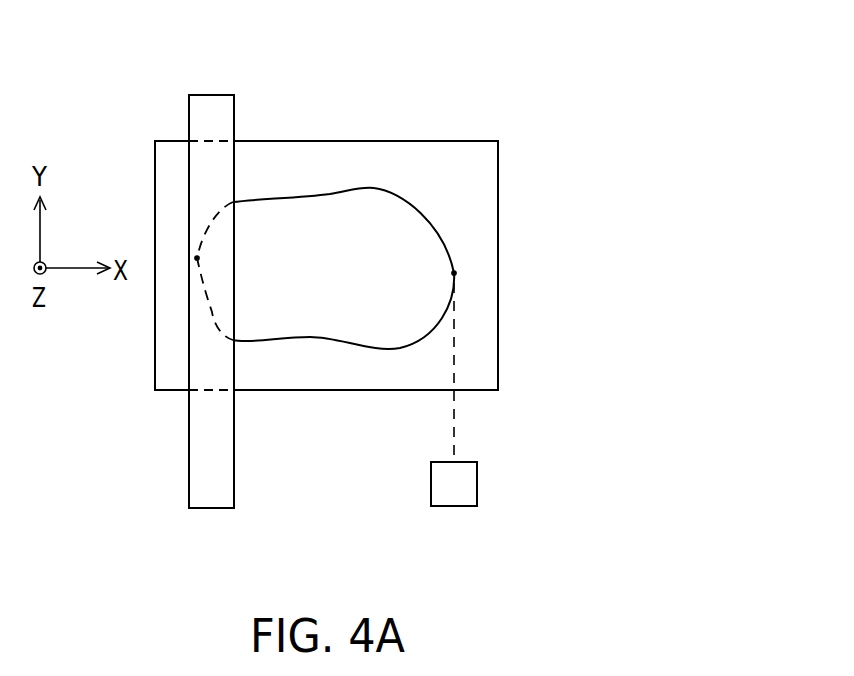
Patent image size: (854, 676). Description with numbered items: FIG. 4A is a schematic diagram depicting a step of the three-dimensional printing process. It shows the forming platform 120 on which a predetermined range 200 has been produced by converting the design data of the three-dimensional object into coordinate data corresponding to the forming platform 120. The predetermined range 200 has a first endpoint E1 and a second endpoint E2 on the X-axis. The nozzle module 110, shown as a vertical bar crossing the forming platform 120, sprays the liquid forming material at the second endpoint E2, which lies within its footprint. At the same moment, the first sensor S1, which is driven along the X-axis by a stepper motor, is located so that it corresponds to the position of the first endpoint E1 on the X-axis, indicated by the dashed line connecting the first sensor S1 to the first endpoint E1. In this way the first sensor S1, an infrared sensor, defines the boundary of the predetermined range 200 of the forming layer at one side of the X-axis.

The nozzle module 110 is at (211, 106).
The forming platform 120 is at (398, 141).
The predetermined range 200 is at (350, 282).
The first endpoint E1 is at (469, 275).
The second endpoint E2 is at (197, 258).
The first sensor S1 is at (454, 394).